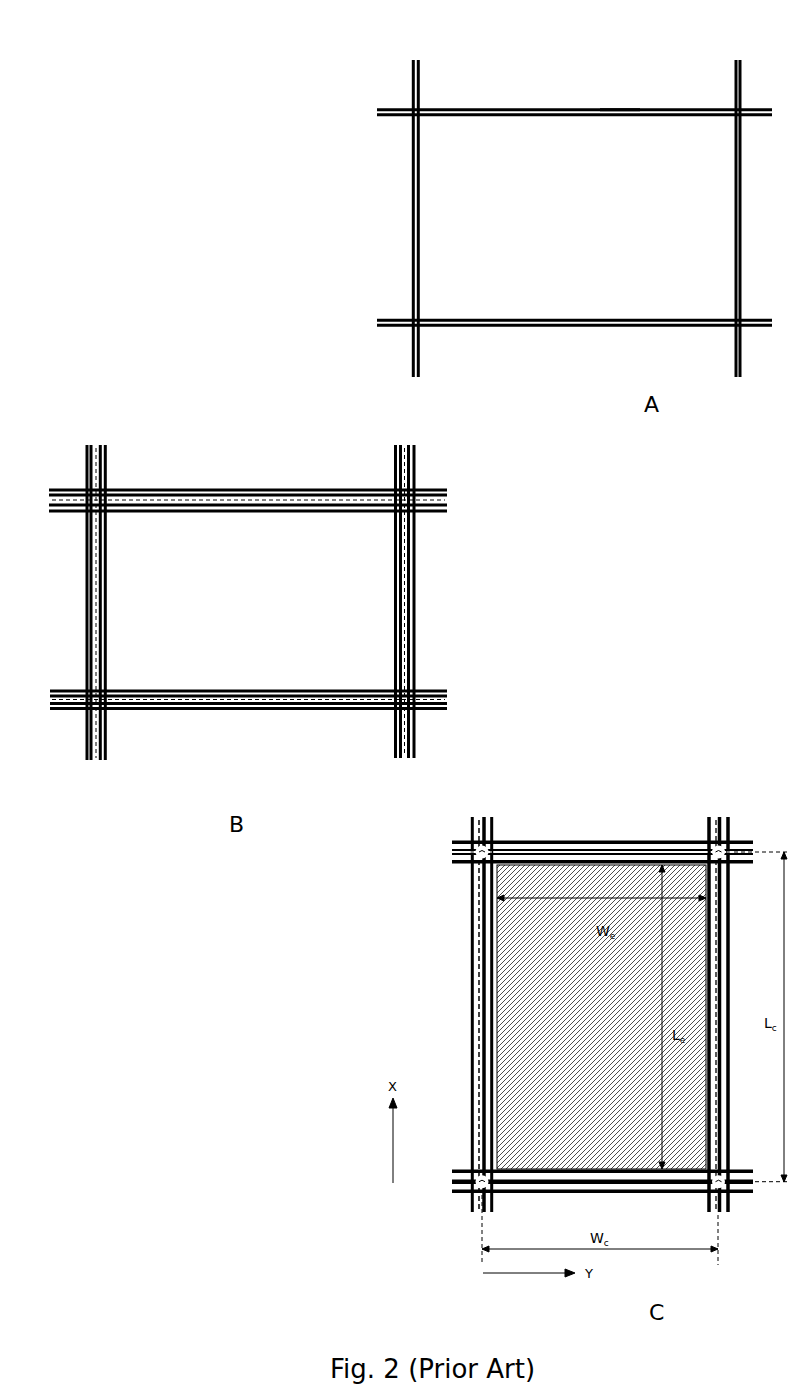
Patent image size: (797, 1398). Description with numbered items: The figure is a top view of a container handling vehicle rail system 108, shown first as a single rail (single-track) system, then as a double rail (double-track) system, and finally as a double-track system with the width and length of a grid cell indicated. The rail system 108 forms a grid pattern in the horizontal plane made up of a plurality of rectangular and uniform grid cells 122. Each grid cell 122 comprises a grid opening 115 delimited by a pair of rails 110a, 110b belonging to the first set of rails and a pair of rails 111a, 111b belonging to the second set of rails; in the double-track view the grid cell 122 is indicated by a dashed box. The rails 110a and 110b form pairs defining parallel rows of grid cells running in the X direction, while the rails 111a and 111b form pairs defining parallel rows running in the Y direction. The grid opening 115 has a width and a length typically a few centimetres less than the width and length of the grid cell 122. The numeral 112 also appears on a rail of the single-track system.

In FIG. 2A, the rail system 108 is at (493, 80).
In FIG. 2B, the rail system 108 is at (97, 416).
In FIG. 2A, the rail 110a is at (493, 118).
In FIG. 2B, the rail 110a is at (263, 490).
In FIG. 2C, the rail 110a is at (495, 1200).
In FIG. 2A, the rail 110b is at (612, 318).
In FIG. 2B, the rail 110b is at (72, 691).
In FIG. 2C, the rail 110b is at (706, 1208).
In FIG. 2A, the rail 111a is at (421, 241).
In FIG. 2B, the rail 111a is at (108, 468).
In FIG. 2C, the rail 111a is at (457, 1168).
In FIG. 2A, the rail 111b is at (733, 176).
In FIG. 2B, the rail 111b is at (416, 606).
In FIG. 2C, the rail 111b is at (458, 864).
In FIG. 2A, the line segment 112 is at (618, 108).
In FIG. 2A, the grid opening 115 is at (592, 225).
In FIG. 2B, the grid opening 115 is at (263, 608).
In FIG. 2C, the grid opening 115 is at (611, 1018).
In FIG. 2B, the grid cell 122 is at (218, 490).
In FIG. 2C, the grid cell 122 is at (480, 938).